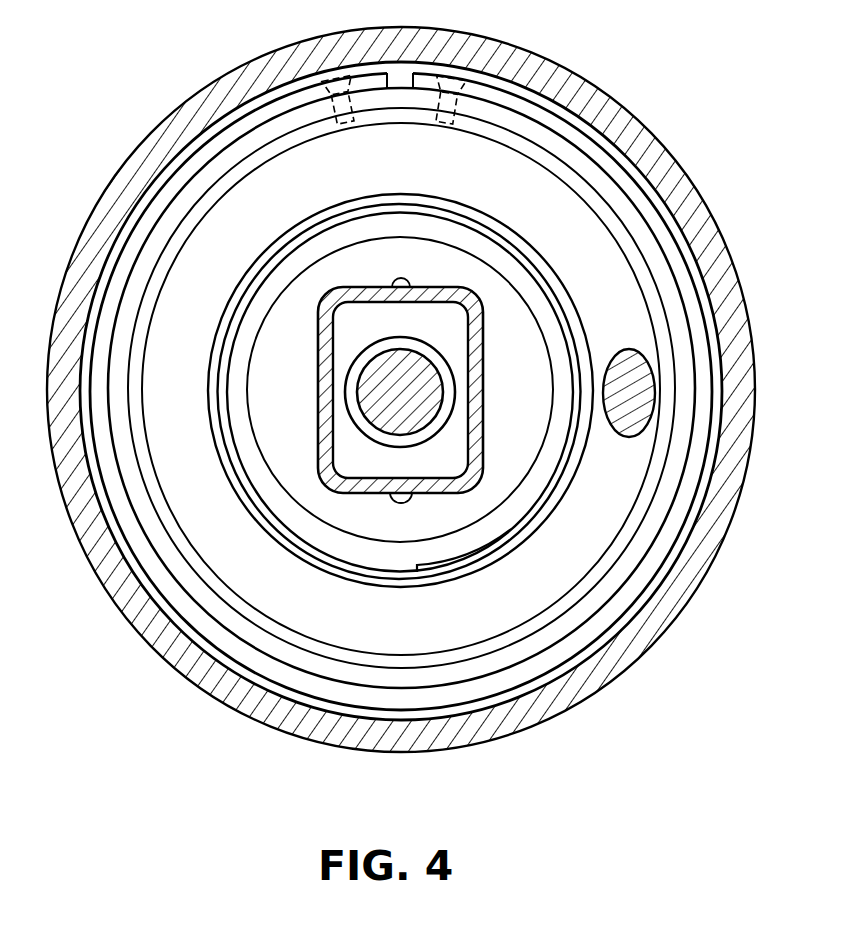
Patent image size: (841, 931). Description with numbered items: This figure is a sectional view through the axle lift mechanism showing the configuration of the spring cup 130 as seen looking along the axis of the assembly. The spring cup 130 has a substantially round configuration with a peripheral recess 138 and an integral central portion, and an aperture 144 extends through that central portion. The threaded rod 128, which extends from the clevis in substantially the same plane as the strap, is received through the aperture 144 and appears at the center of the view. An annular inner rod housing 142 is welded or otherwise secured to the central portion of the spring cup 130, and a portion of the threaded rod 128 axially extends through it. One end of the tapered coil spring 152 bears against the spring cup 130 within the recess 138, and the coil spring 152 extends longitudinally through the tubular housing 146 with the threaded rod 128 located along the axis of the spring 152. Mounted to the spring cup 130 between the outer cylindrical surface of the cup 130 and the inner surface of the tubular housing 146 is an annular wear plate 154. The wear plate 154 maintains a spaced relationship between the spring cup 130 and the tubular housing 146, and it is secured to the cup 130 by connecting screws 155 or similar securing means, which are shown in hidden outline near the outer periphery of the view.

The threaded rod 128 is at (430, 390).
The spring cup 130 is at (602, 168).
The peripheral recess 138 is at (612, 208).
The inner rod housing 142 is at (436, 290).
The aperture 144 is at (345, 372).
The tubular housing 146 is at (603, 92).
The coil spring 152 is at (540, 615).
The wear plate 154 is at (523, 92).
The connecting screws 155 is at (318, 70).